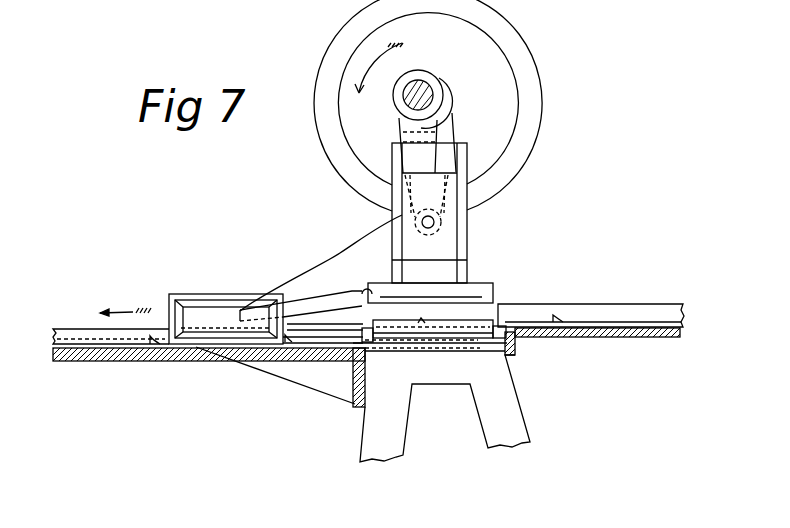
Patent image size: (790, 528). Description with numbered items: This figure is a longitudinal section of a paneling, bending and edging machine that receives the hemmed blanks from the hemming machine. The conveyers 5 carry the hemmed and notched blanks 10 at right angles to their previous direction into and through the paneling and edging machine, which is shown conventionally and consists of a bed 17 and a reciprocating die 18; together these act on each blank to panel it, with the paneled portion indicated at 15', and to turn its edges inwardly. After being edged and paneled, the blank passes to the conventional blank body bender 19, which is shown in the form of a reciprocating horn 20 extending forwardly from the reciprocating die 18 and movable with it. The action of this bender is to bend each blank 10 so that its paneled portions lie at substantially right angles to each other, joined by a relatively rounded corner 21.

The conveyer 5 is at (623, 330).
The blank 10 is at (336, 323).
The slide block 15' is at (226, 319).
The bed 17 is at (486, 337).
The reciprocating die 18 is at (491, 287).
The blank body bender 19 is at (340, 260).
The reciprocating horn 20 is at (297, 308).
The rounded corner 21 is at (196, 348).